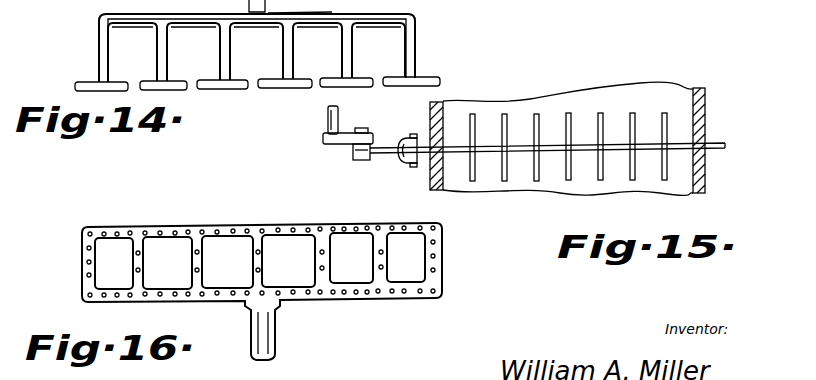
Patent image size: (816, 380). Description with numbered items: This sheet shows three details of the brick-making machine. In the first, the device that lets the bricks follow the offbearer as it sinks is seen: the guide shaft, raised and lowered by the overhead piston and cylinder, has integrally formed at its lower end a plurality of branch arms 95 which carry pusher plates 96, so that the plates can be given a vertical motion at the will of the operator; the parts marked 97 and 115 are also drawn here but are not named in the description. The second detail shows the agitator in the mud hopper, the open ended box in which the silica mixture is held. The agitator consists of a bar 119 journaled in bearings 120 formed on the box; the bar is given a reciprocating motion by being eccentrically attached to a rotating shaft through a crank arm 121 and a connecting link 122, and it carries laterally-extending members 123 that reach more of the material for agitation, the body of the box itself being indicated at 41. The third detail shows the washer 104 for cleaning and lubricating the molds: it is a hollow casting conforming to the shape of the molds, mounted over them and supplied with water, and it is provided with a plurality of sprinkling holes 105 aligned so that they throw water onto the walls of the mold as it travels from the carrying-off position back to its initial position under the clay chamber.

In FIG. 14, the branch arms 95 is at (99, 58).
In FIG. 14, the pusher plates 96 is at (213, 70).
In FIG. 14, the clamp on rail 97 is at (290, 6).
In FIG. 14, the rail member 115 is at (82, 1).
In FIG. 15, the casing body 41 is at (590, 182).
In FIG. 15, the bar 119 is at (584, 140).
In FIG. 15, the bearings 120 is at (442, 132).
In FIG. 15, the crank arm 121 is at (350, 150).
In FIG. 15, the connecting link 122 is at (382, 155).
In FIG. 15, the laterally-extending members 123 is at (663, 165).
In FIG. 16, the washer 104 is at (483, 272).
In FIG. 16, the sprinkling holes 105 is at (402, 312).